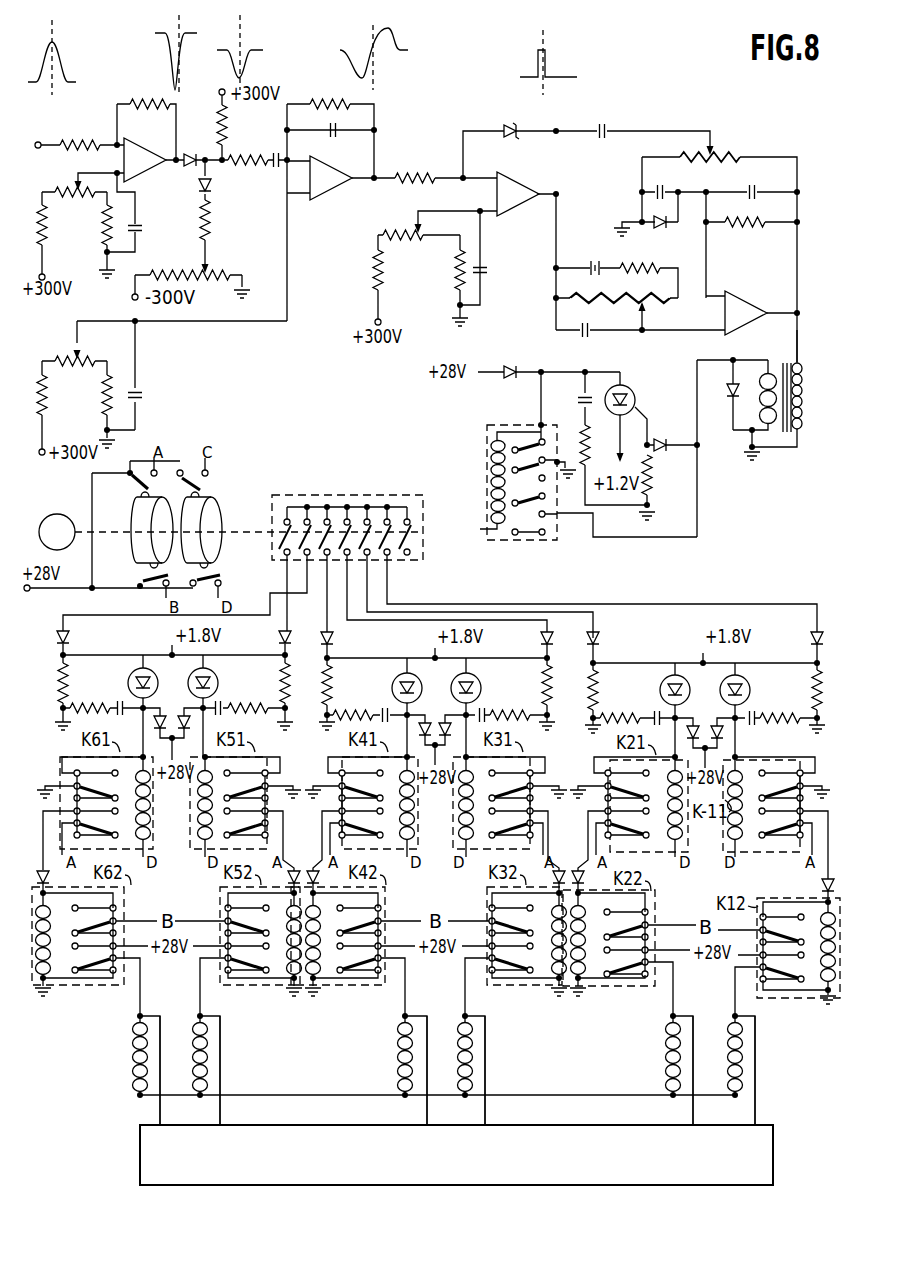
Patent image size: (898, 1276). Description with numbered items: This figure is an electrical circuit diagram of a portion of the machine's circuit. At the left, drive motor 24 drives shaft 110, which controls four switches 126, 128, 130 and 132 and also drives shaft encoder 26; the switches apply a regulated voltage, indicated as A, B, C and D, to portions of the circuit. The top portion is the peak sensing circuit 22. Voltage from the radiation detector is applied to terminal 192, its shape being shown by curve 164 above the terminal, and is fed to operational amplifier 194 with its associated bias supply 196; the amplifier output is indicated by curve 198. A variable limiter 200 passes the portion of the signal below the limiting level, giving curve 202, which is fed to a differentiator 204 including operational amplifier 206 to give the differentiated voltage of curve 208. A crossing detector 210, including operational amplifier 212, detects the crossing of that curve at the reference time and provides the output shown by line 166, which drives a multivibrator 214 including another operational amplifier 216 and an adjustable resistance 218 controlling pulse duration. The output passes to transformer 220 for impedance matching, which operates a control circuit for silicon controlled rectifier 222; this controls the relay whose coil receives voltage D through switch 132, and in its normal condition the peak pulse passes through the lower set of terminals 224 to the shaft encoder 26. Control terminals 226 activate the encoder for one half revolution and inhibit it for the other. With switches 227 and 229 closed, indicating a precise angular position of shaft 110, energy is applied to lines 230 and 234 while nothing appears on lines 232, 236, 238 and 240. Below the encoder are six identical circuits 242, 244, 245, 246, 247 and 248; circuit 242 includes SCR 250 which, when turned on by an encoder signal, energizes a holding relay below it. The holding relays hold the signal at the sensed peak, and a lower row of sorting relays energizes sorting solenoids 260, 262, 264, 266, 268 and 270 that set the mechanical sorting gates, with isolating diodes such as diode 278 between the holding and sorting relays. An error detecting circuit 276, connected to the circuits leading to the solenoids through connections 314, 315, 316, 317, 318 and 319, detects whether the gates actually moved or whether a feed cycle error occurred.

The peak sensing circuit 22 is at (676, 211).
The drive motor 24 is at (55, 510).
The shaft encoder 26 is at (324, 488).
The shaft 110 is at (258, 530).
The switch 126 is at (130, 485).
The switch 128 is at (150, 596).
The switch 130 is at (210, 476).
The switch 132 is at (222, 578).
The curve 164 is at (62, 61).
The line 166 is at (563, 66).
The terminal 192 is at (38, 145).
The operational amplifier 194 is at (163, 148).
The bias supply 196 is at (94, 210).
The curve 198 is at (165, 67).
The variable limiter 200 is at (251, 176).
The curve 202 is at (250, 66).
The differentiator 204 is at (337, 200).
The operational amplifier 206 is at (322, 162).
The curve 208 is at (392, 41).
The crossing detector 210 is at (491, 121).
The operational amplifier 212 is at (510, 180).
The multivibrator 214 is at (630, 205).
The operational amplifier 216 is at (738, 300).
The adjustable resistance 218 is at (724, 150).
The transformer 220 is at (796, 400).
The silicon controlled rectifier 222 is at (633, 394).
The lower set of terminals 224 is at (555, 530).
The control terminals 226 is at (410, 531).
The switch 227 is at (394, 506).
The switch 229 is at (352, 506).
The line 230 is at (387, 589).
The line 232 is at (367, 574).
The line 234 is at (339, 612).
The line 236 is at (320, 607).
The line 238 is at (300, 590).
The line 240 is at (281, 568).
The circuit 242 is at (787, 652).
The circuit 244 is at (650, 652).
The circuit 245 is at (521, 652).
The circuit 246 is at (372, 654).
The circuit 247 is at (258, 650).
The circuit 248 is at (124, 650).
The SCR 250 is at (752, 690).
The sorting solenoid 260 is at (745, 1066).
The sorting solenoid 262 is at (670, 1056).
The sorting solenoid 264 is at (472, 1064).
The sorting solenoid 266 is at (400, 1056).
The sorting solenoid 268 is at (206, 1062).
The sorting solenoid 270 is at (132, 1054).
The error detecting circuit 276 is at (140, 1156).
The isolating diode 278 is at (823, 884).
The lead 314 is at (757, 1100).
The lead 315 is at (694, 1110).
The lead 316 is at (486, 1109).
The lead 317 is at (428, 1107).
The lead 318 is at (222, 1106).
The lead 319 is at (162, 1106).